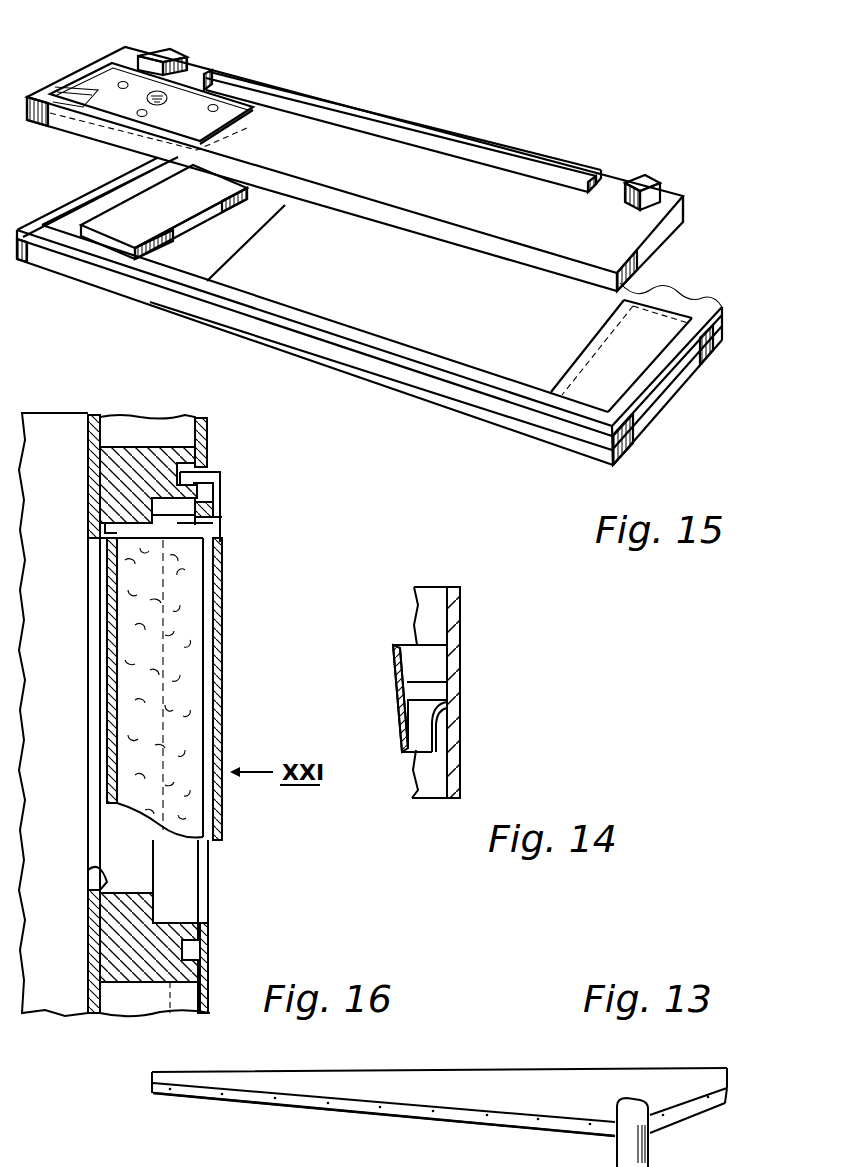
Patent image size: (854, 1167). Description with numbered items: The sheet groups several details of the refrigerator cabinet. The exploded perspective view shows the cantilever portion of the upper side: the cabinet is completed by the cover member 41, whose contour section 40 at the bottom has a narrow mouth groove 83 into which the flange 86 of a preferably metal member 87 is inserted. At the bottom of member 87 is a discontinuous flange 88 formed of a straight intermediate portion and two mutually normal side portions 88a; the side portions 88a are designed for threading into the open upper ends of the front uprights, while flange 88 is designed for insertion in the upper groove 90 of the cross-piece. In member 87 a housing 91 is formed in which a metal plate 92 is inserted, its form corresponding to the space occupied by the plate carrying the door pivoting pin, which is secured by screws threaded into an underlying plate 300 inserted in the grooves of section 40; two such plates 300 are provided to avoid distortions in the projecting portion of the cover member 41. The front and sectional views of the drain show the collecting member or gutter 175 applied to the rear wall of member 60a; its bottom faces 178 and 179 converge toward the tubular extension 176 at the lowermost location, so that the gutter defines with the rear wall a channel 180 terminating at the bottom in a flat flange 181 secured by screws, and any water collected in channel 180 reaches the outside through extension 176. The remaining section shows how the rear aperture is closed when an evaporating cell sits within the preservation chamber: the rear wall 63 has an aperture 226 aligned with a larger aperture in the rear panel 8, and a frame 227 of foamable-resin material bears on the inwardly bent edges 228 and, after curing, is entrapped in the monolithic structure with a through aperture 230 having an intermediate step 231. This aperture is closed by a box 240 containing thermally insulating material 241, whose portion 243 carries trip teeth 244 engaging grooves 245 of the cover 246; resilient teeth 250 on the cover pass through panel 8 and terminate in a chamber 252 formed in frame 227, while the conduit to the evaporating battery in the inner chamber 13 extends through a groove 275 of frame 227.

In FIG. 16, the rear panel 8 is at (207, 428).
In FIG. 16, the inner chamber 13 is at (70, 1000).
In FIG. 15, the contour section 40 is at (678, 377).
In FIG. 15, the cover member 41 is at (647, 443).
In FIG. 14, the member 60a is at (463, 600).
In FIG. 16, the rear wall 63 is at (90, 490).
In FIG. 15, the narrow mouth groove 83 is at (147, 193).
In FIG. 15, the flange 86 is at (660, 235).
In FIG. 15, the metal member 87 is at (683, 196).
In FIG. 15, the discontinuous flange 88 is at (403, 133).
In FIG. 15, the side portions 88a is at (187, 56).
In FIG. 16, the upper groove 90 is at (81, 444).
In FIG. 15, the housing 91 is at (50, 112).
In FIG. 15, the metal plate 92 is at (190, 102).
In FIG. 14, the gutter 175 is at (414, 641).
In FIG. 13, the gutter 175 is at (683, 1063).
In FIG. 14, the tubular extension 176 is at (410, 732).
In FIG. 13, the tubular extension 176 is at (648, 1150).
In FIG. 14, the bottom face 178 is at (440, 693).
In FIG. 13, the bottom face 178 is at (452, 1103).
In FIG. 13, the bottom face 179 is at (675, 1103).
In FIG. 14, the channel 180 is at (430, 660).
In FIG. 13, the flat flange 181 is at (605, 1125).
In FIG. 16, the aperture 226 is at (92, 630).
In FIG. 16, the frame 227 is at (112, 505).
In FIG. 16, the inwardly bent edges 228 is at (88, 870).
In FIG. 16, the through aperture 230 is at (167, 847).
In FIG. 16, the intermediate step 231 is at (153, 910).
In FIG. 16, the box 240 is at (228, 590).
In FIG. 16, the filling 241 is at (188, 720).
In FIG. 16, the portion 243 is at (113, 767).
In FIG. 16, the trip teeth 244 is at (207, 505).
In FIG. 16, the grooves 245 is at (215, 527).
In FIG. 16, the cover 246 is at (222, 820).
In FIG. 16, the resilient teeth 250 is at (212, 470).
In FIG. 16, the chamber 252 is at (180, 465).
In FIG. 16, the groove 275 is at (140, 925).
In FIG. 15, the plate 300 is at (225, 206).